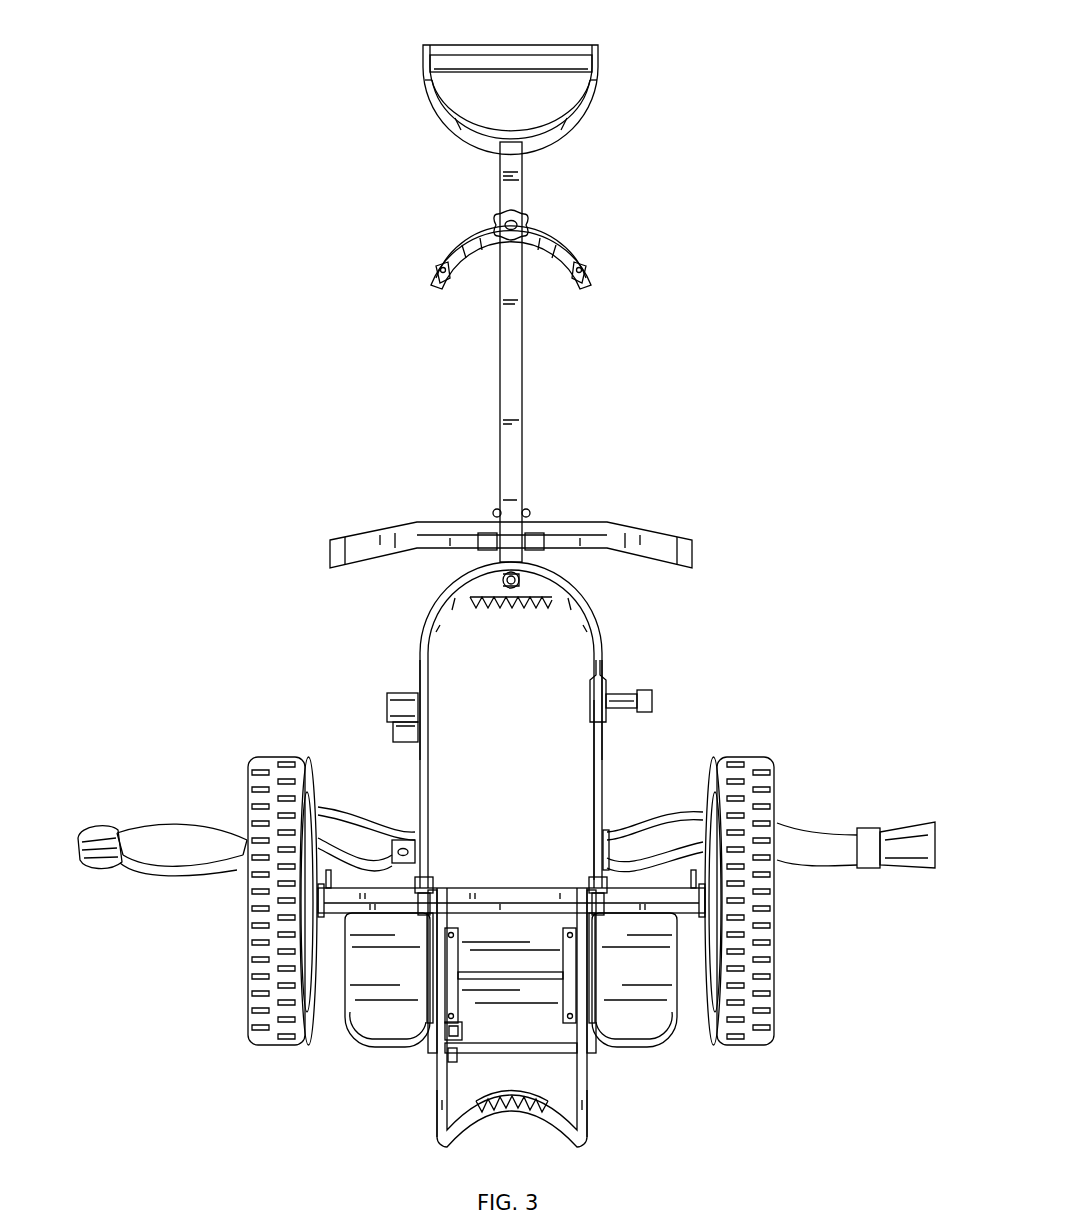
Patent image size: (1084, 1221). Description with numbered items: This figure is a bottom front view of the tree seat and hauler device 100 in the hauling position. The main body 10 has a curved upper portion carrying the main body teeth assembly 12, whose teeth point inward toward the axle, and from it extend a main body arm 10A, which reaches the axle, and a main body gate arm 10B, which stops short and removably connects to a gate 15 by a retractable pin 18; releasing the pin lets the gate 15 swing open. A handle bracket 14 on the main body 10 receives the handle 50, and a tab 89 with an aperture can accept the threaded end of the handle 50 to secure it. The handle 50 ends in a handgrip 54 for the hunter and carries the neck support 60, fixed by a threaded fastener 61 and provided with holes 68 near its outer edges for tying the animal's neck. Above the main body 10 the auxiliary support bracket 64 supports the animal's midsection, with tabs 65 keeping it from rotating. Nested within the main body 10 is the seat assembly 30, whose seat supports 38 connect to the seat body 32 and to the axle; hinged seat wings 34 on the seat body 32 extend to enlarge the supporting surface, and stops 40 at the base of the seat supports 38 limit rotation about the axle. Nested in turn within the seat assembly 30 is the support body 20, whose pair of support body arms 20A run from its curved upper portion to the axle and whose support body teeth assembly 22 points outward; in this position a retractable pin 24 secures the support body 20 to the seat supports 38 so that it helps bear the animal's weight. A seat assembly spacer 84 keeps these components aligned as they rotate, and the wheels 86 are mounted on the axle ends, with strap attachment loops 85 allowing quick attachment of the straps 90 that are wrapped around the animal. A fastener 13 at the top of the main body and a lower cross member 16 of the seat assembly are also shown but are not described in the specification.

The tree seat and hauler device 100 is at (313, 405).
The handgrip 54 is at (557, 55).
The handle 50 is at (522, 375).
The threaded fastener 61 is at (520, 222).
The neck support 60 is at (575, 247).
The holes 68 is at (432, 268).
The auxiliary support bracket 64 is at (622, 528).
The tabs 65 is at (508, 530).
The main body 10 is at (516, 725).
The main body arm 10A is at (418, 665).
The main body gate arm 10B is at (606, 655).
The fastener 13 is at (522, 580).
The main body teeth assembly 12 is at (503, 607).
The handle bracket 14 is at (386, 708).
The retractable pin 18 is at (654, 702).
The gate 15 is at (604, 758).
The tab 89 is at (403, 838).
The strap attachment loops 85 is at (338, 862).
The stops 40 is at (428, 878).
The seat assembly spacer 84 is at (487, 890).
The wheels 86 is at (275, 1045).
The straps 90 is at (160, 850).
The seat wings 34 is at (372, 1027).
The seat supports 38 is at (430, 1015).
The seat assembly 30 is at (563, 1016).
The seat body 32 is at (565, 1035).
The retractable pin 24 is at (462, 1030).
The cross member 16 is at (458, 1055).
The support body 20 is at (516, 1044).
The support body arms 20A is at (437, 1103).
The support body teeth assembly 22 is at (504, 1126).